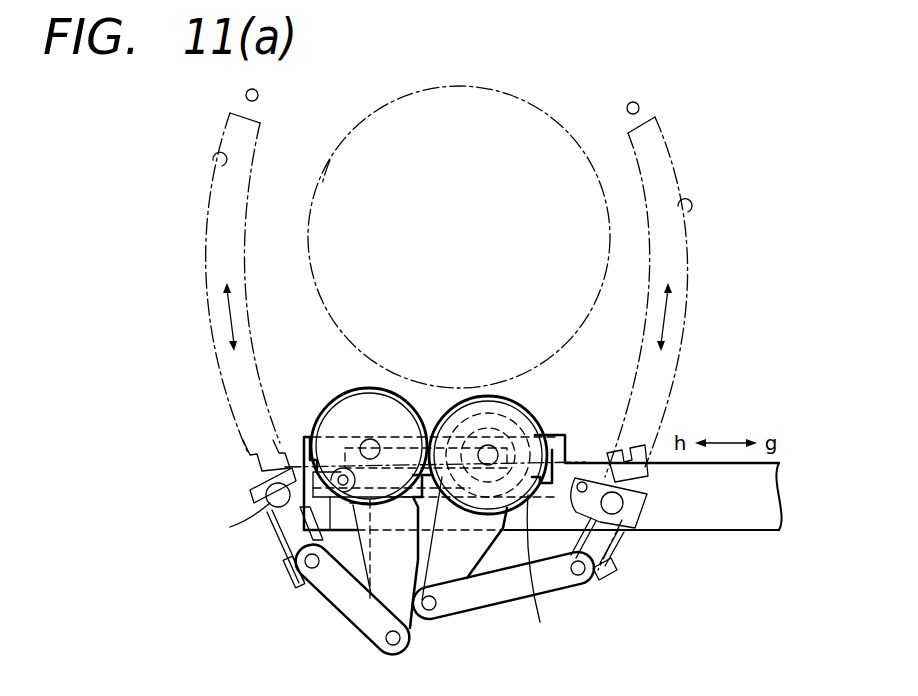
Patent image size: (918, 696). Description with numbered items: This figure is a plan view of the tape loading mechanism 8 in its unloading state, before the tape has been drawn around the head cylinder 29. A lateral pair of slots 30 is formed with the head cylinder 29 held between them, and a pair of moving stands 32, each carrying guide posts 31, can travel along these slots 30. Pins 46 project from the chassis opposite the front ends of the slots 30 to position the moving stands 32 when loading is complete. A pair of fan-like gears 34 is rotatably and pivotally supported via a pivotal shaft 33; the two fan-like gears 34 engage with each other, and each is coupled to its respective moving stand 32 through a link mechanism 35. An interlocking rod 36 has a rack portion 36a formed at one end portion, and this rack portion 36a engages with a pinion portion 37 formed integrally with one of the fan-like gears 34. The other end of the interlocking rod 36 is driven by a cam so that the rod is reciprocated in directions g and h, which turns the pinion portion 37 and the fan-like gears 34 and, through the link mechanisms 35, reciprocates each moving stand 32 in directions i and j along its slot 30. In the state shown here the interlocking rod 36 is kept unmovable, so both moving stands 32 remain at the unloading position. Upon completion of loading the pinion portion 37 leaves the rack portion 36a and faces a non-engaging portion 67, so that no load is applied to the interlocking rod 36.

The tape loading mechanism 8 is at (377, 108).
The head cylinder 29 is at (336, 163).
The slots 30 is at (216, 165).
The pins 46 is at (259, 97).
The pivotal shaft 33 is at (378, 442).
The fan-like gears 34 is at (338, 388).
The pinion portion 37 is at (517, 404).
The guide posts 31 is at (262, 497).
The moving stands 32 is at (285, 570).
The link mechanisms 35 is at (355, 572).
The interlocking rod 36 is at (770, 500).
The rack portion 36a is at (544, 571).
The non-engaging portion 67 is at (370, 600).